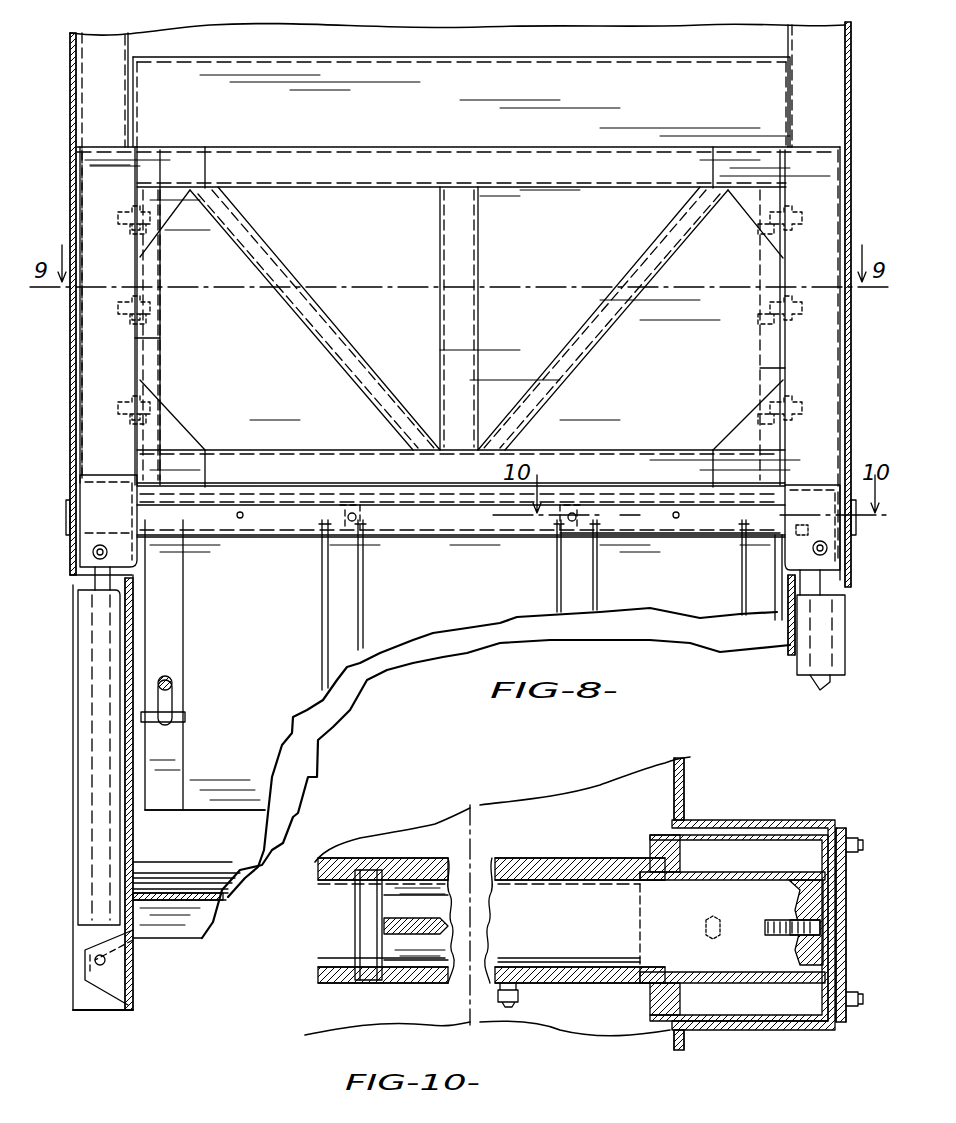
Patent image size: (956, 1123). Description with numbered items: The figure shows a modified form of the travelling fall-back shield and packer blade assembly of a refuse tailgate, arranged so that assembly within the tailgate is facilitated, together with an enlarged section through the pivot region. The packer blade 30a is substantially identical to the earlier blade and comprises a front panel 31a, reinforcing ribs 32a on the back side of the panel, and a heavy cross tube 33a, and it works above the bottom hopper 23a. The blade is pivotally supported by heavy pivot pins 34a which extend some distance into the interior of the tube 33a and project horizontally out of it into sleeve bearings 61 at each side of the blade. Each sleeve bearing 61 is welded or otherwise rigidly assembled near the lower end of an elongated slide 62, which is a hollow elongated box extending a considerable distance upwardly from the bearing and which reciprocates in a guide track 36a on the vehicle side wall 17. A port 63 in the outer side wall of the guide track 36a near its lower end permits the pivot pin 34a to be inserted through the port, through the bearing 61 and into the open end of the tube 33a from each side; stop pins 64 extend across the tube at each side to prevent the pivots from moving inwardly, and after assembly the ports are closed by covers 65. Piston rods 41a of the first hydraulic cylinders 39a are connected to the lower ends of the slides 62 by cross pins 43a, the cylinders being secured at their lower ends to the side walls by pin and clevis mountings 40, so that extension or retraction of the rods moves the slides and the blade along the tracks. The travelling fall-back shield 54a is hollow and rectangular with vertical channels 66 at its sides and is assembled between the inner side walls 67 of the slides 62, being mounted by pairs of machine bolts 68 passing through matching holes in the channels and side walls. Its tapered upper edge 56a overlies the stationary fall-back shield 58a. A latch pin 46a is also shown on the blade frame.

In FIG. 10, the side wall 17 is at (686, 760).
In FIG. 8, the bottom hopper 23a is at (181, 912).
In FIG. 10, the bottom hopper 23a is at (540, 985).
In FIG. 8, the packer blade 30a is at (245, 623).
In FIG. 8, the front panel 31a is at (200, 812).
In FIG. 8, the reinforcing ribs 32a is at (325, 616).
In FIG. 8, the cross tube 33a is at (432, 545).
In FIG. 8, the pivot pins 34a is at (304, 535).
In FIG. 10, the pivot pins 34a is at (594, 882).
In FIG. 8, the guide tracks 36a is at (78, 104).
In FIG. 10, the guide tracks 36a is at (778, 824).
In FIG. 8, the first hydraulic cylinders 39a is at (92, 849).
In FIG. 8, the pin and clevis mountings 40 is at (105, 963).
In FIG. 8, the piston rods 41a is at (100, 588).
In FIG. 8, the cross pins 43a is at (93, 552).
In FIG. 8, the latch pin 46a is at (172, 702).
In FIG. 8, the travelling fall-back shield 54a is at (548, 263).
In FIG. 8, the tapered upper edge 56a is at (574, 58).
In FIG. 8, the stationary fall-back shield 58a is at (356, 49).
In FIG. 10, the sleeve bearings 61 is at (703, 878).
In FIG. 8, the slide 62 is at (80, 380).
In FIG. 10, the slide 62 is at (696, 838).
In FIG. 10, the port 63 is at (832, 892).
In FIG. 8, the stop pins 64 is at (356, 521).
In FIG. 10, the stop pins 64 is at (352, 958).
In FIG. 8, the covers 65 is at (70, 508).
In FIG. 10, the covers 65 is at (848, 930).
In FIG. 8, the vertical channels 66 is at (162, 368).
In FIG. 8, the inner side walls 67 is at (138, 342).
In FIG. 8, the machine bolts 68 is at (155, 236).